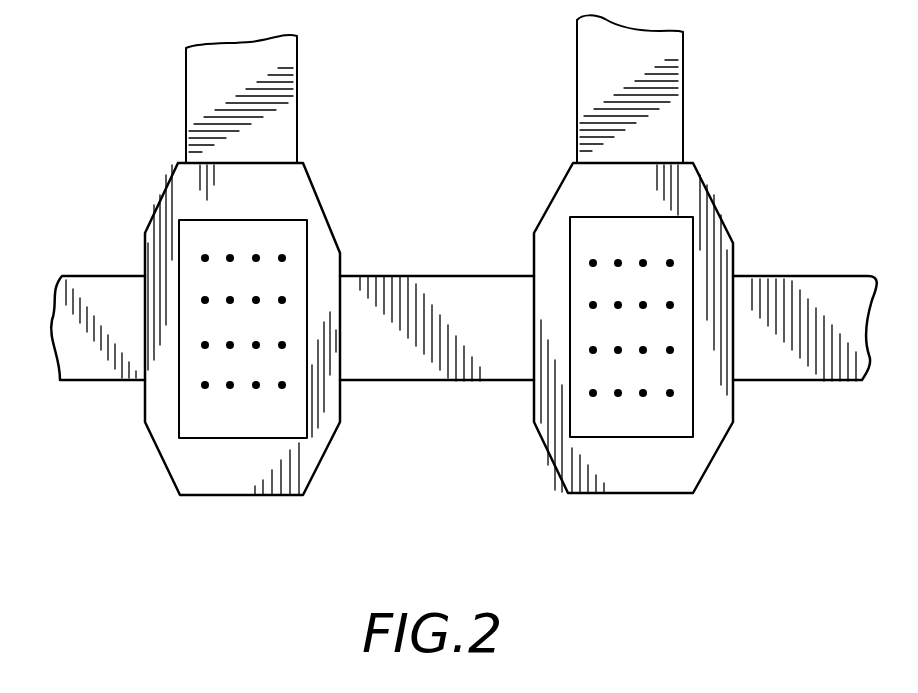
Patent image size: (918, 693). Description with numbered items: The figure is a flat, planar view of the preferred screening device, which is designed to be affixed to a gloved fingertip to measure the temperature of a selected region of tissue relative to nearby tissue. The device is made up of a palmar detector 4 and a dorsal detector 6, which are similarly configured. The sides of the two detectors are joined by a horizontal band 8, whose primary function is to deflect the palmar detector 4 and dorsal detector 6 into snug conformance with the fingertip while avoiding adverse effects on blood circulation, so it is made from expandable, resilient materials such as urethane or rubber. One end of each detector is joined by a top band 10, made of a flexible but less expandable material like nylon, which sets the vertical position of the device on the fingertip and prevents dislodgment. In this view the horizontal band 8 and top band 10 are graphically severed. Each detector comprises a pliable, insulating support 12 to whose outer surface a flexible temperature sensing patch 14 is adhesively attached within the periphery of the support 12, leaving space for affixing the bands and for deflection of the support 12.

The palmar detector 4 is at (715, 202).
The dorsal detector 6 is at (327, 207).
The horizontal band 8 is at (108, 380).
The top band 10 is at (297, 130).
The support 12 is at (318, 250).
The temperature sensing patch 14 is at (307, 373).